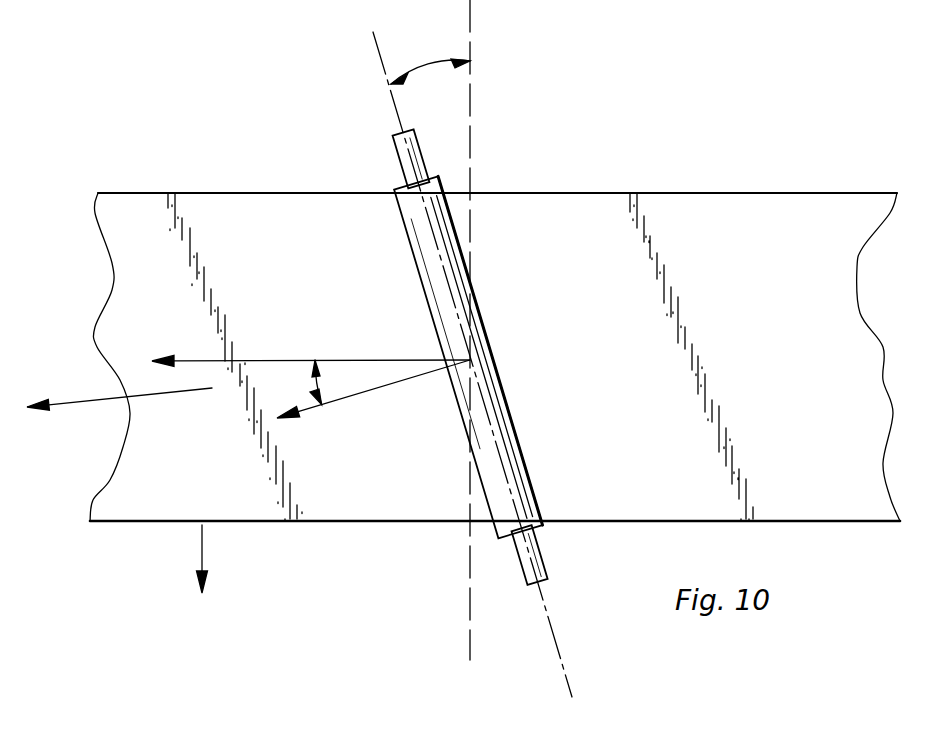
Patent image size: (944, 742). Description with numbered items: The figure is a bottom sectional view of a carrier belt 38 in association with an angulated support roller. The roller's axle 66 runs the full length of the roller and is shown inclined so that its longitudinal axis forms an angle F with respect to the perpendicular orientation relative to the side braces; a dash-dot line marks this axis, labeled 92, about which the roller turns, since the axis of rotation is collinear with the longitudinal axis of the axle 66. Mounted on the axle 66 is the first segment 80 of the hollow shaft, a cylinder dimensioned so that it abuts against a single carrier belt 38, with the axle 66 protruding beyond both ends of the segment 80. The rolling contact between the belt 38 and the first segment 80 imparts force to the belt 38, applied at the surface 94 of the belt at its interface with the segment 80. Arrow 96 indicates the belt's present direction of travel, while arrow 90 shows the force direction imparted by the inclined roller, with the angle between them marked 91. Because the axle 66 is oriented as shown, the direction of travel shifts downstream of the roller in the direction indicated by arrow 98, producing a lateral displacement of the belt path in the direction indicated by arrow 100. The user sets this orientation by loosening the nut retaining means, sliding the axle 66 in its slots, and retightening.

The carrier belt 38 is at (714, 378).
The surface of the belt 94 is at (246, 461).
The axle 66 is at (424, 163).
The first segment 80 is at (516, 430).
The nozzle axis 92 is at (563, 670).
The arrow indicating direction of travel of the belt 96 is at (272, 360).
The jet direction arrow 90 is at (353, 396).
The angle between arrows 91 is at (415, 378).
The arrow indicating shifted direction of belt travel 98 is at (78, 402).
The arrow indicating lateral displacement of belt path 100 is at (202, 545).
The angle F is at (428, 66).